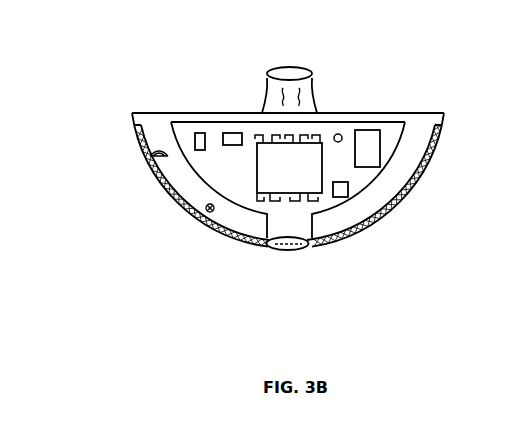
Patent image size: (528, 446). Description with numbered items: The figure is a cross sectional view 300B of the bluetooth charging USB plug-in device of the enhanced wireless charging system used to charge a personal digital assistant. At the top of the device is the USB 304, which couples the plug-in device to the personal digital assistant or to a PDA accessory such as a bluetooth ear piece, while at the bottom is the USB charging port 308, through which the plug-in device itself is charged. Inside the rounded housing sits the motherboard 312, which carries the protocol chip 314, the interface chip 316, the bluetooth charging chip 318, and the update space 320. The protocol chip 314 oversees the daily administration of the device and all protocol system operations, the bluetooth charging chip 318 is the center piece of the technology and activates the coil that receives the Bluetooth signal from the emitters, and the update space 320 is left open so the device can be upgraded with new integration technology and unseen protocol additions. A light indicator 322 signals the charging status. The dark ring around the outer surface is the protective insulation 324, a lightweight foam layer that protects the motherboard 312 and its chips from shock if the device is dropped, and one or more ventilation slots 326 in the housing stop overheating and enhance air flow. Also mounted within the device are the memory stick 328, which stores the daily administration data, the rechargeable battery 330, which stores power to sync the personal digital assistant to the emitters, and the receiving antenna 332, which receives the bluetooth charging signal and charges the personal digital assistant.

The cross sectional view 300B is at (93, 350).
The USB 304 is at (267, 72).
The USB charging port 308 is at (288, 250).
The motherboard 312 is at (397, 121).
The protocol chip 314 is at (381, 156).
The interface chip 316 is at (348, 188).
The bluetooth charging chip 318 is at (256, 156).
The update space 320 is at (195, 158).
The light indicator 322 is at (207, 211).
The protective insulation 324 is at (366, 228).
The ventilation slots 326 is at (152, 153).
The memory stick 328 is at (195, 135).
The rechargeable battery 330 is at (222, 132).
The receiving antenna 332 is at (338, 133).